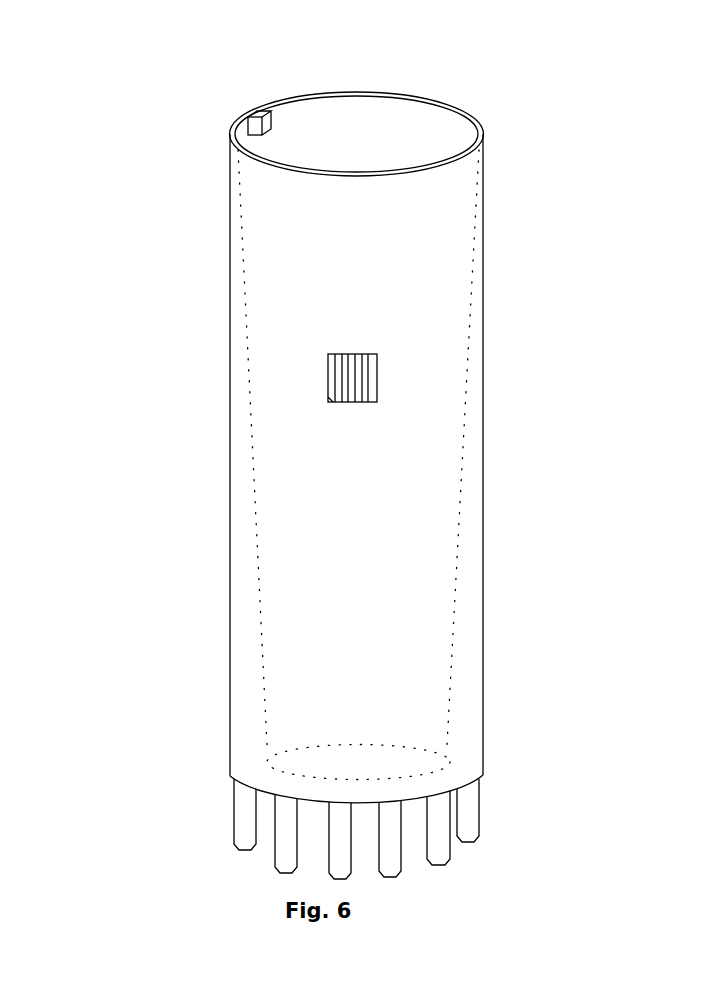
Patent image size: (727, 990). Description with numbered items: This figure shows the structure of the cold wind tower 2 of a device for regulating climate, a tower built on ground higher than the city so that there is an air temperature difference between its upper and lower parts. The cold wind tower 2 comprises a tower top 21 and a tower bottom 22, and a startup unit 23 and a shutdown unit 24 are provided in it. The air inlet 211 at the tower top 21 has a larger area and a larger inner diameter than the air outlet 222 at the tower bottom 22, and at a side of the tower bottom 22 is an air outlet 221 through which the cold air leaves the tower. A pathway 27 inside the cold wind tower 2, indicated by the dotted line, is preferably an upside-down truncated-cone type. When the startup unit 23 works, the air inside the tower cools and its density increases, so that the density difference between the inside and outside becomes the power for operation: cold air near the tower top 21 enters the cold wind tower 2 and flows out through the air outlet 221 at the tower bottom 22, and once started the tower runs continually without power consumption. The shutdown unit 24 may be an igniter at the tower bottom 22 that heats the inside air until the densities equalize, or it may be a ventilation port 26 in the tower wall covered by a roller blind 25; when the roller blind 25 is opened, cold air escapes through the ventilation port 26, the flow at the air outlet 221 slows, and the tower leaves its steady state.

The cold wind tower 2 is at (494, 287).
The tower top 21 is at (483, 125).
The air inlet 211 is at (370, 113).
The tower bottom 22 is at (317, 802).
The air outlet 221 is at (413, 818).
The air outlet 222 is at (352, 762).
The startup unit 23 is at (255, 123).
The shutdown unit 24 is at (125, 495).
The roller blind 25 is at (348, 364).
The ventilation port 26 is at (337, 392).
The pathway 27 is at (430, 473).